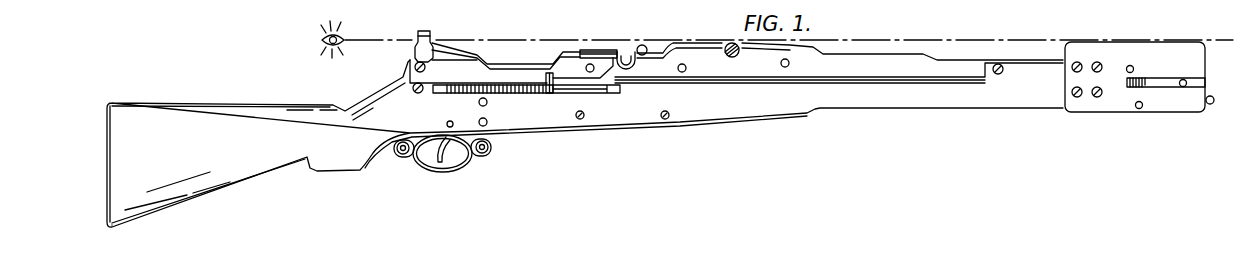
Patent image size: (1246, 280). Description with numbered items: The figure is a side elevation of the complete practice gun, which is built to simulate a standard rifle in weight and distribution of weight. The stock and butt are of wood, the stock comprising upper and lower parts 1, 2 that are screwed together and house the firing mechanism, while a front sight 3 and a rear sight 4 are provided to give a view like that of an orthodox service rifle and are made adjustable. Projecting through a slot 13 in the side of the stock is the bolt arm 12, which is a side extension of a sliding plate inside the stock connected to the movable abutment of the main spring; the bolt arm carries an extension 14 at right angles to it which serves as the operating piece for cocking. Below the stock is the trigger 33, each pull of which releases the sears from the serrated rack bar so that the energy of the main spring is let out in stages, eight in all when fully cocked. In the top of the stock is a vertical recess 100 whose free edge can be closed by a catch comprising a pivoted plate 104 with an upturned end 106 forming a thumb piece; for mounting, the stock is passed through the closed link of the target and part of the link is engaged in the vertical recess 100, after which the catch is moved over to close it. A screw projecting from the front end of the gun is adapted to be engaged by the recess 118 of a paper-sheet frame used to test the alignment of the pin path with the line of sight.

The upper stock part 1 is at (828, 70).
The lower stock part 2 is at (862, 97).
The front sight 3 is at (722, 43).
The rear sight 4 is at (425, 32).
The bolt arm 12 is at (570, 93).
The slot 13 is at (610, 93).
The extension 14 is at (545, 72).
The trigger 33 is at (442, 152).
The vertical recess 100 is at (633, 68).
The catch plate 104 is at (587, 50).
The upturned end 106 is at (630, 48).
The recess 118 is at (1210, 108).